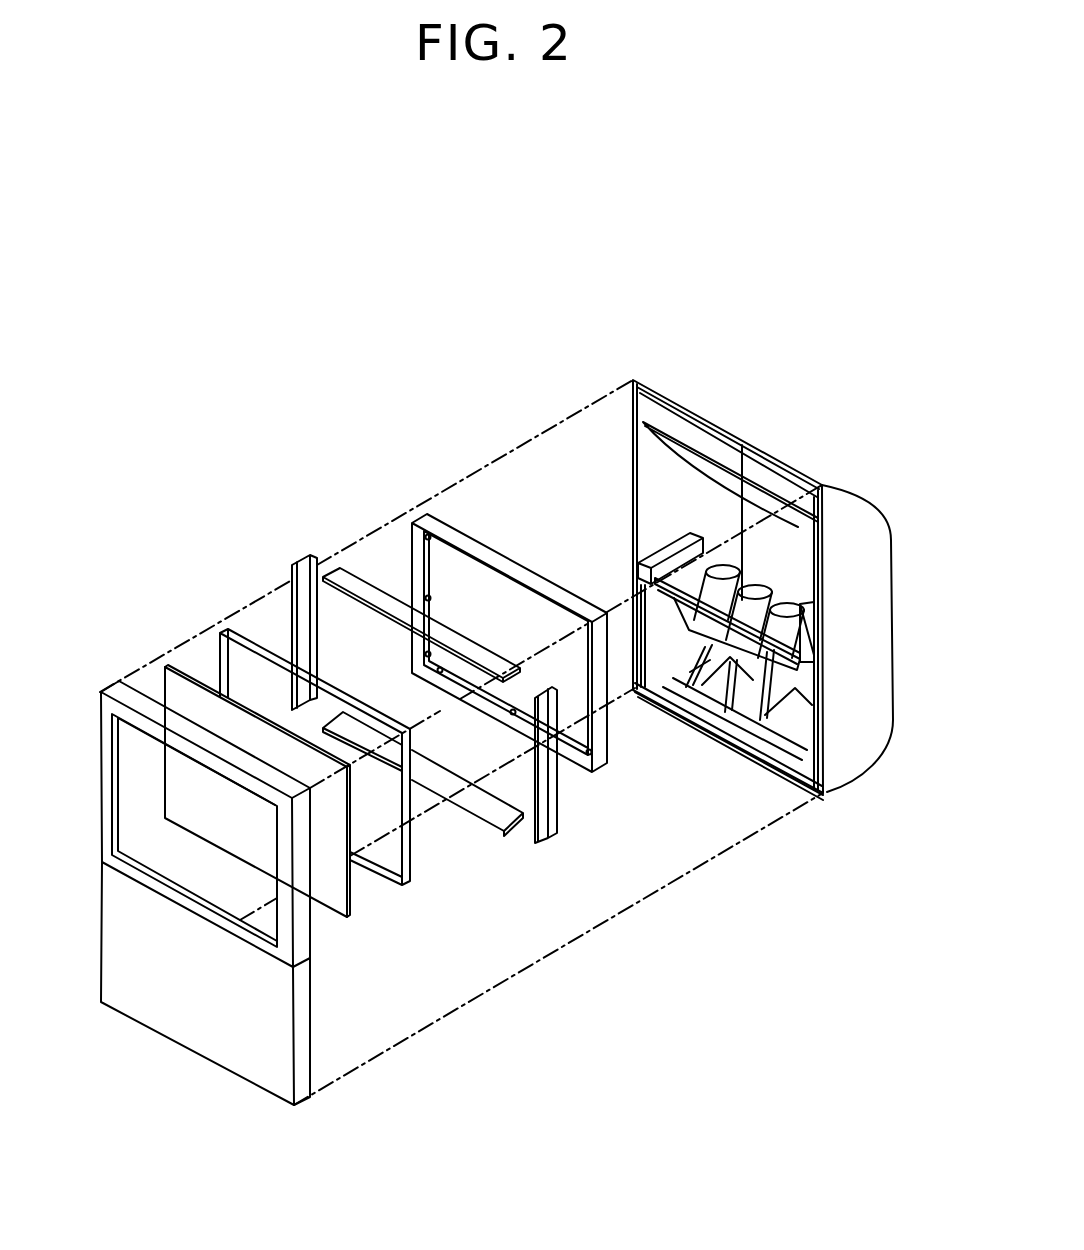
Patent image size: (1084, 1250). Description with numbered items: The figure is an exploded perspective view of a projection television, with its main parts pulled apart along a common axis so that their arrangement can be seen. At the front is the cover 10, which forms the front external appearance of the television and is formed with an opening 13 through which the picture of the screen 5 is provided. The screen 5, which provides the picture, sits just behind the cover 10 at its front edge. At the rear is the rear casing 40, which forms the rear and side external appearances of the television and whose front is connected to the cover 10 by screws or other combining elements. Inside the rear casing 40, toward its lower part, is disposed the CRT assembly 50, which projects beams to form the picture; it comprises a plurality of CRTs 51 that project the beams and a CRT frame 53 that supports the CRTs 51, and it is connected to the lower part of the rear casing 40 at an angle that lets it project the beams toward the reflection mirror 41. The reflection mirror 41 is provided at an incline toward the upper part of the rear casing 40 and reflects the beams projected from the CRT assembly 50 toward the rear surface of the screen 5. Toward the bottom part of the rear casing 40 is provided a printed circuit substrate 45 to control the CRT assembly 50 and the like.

The screen 5 is at (158, 668).
The cover 10 is at (105, 857).
The opening 13 is at (112, 785).
The rear casing 40 is at (892, 572).
The reflection mirror 41 is at (725, 467).
The printed circuit substrate 45 is at (802, 632).
The CRT assembly 50 is at (725, 688).
The CRTs 51 is at (783, 633).
The CRT frame 53 is at (747, 657).